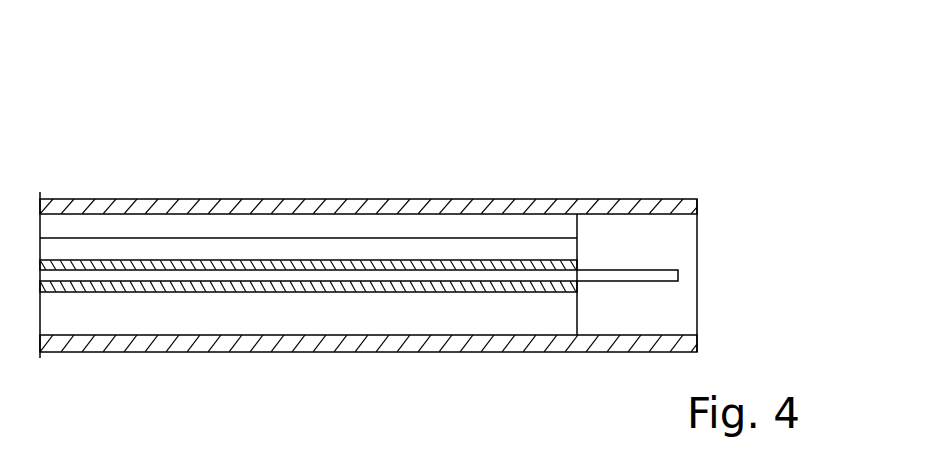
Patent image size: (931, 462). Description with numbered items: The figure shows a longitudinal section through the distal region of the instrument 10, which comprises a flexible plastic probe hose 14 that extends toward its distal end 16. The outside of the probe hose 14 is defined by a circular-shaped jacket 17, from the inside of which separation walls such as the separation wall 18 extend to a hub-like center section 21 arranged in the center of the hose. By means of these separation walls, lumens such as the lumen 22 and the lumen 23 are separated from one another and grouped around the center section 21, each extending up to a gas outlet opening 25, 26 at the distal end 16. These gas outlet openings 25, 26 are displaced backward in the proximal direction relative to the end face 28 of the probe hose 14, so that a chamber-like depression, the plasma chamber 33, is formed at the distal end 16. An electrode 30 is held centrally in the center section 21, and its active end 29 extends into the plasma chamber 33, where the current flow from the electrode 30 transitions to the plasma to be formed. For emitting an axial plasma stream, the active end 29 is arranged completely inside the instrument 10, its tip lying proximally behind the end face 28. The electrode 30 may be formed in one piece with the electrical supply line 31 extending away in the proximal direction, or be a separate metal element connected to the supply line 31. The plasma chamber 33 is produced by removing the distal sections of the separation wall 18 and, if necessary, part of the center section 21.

The instrument 10 is at (706, 100).
The probe hose 14 is at (335, 158).
The distal end 16 is at (596, 158).
The jacket 17 is at (253, 207).
The separation wall 18 is at (365, 238).
The center section 21 is at (448, 262).
The lumen 22 is at (163, 228).
The lumen 23 is at (243, 318).
The gas outlet opening 25 is at (585, 241).
The gas outlet opening 26 is at (586, 317).
The end face 28 is at (698, 206).
The active end 29 is at (652, 270).
The electrode 30 is at (497, 272).
The electrical supply line 31 is at (93, 273).
The plasma chamber 33 is at (662, 310).